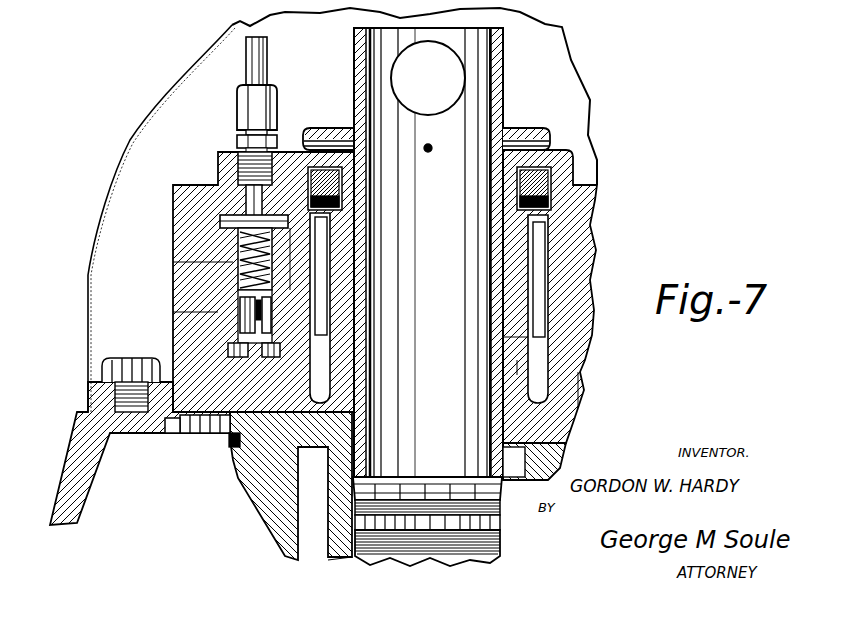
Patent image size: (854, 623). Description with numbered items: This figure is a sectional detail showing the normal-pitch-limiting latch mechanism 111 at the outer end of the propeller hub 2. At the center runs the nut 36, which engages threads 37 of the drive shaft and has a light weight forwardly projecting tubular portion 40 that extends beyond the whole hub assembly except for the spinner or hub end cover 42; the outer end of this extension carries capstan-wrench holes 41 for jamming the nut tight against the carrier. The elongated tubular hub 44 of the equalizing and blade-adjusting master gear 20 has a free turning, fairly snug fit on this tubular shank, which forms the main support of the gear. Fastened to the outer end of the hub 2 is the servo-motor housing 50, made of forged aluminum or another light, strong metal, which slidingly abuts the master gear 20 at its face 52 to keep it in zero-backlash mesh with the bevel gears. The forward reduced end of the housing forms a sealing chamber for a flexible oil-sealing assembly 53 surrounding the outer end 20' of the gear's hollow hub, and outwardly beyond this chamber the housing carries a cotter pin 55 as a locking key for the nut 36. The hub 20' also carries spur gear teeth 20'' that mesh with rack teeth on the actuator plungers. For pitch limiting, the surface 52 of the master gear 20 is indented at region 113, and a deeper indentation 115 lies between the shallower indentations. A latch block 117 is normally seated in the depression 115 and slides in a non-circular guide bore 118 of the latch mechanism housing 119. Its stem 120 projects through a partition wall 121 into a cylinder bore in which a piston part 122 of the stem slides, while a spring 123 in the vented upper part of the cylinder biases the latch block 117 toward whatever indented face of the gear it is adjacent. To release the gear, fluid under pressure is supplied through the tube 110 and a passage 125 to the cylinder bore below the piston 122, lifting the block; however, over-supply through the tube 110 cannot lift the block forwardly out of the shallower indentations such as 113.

The hub 2 is at (80, 432).
The master gear 20 is at (426, 486).
The outer end of the hollow hub of the gear 20' is at (581, 309).
The spur gear teeth 20'' is at (424, 308).
The nut 36 is at (352, 545).
The threads 37 is at (405, 540).
The tubular portion 40 is at (500, 350).
The capstan-wrench holes 41 is at (424, 87).
The spinner or hub end cover 42 is at (145, 112).
The elongated tubular hub 44 is at (517, 367).
The servo-motor housing 50 is at (600, 212).
The surface of the master gear 52 is at (580, 386).
The flexible oil-sealing assembly 53 is at (568, 170).
The cotter pin 55 is at (452, 143).
The tube 110 is at (270, 60).
The pitch range selector latch-abutment mechanism 111 is at (158, 276).
The indentation 113 is at (206, 432).
The deeper indentation 115 is at (235, 448).
The latch block 117 is at (180, 435).
The non-circular guide bore 118 is at (237, 368).
The latch mechanism housing 119 is at (245, 292).
The stem 120 is at (268, 330).
The partition wall 121 is at (245, 333).
The piston part 122 is at (268, 300).
The spring 123 is at (220, 220).
The passage 125 is at (313, 253).